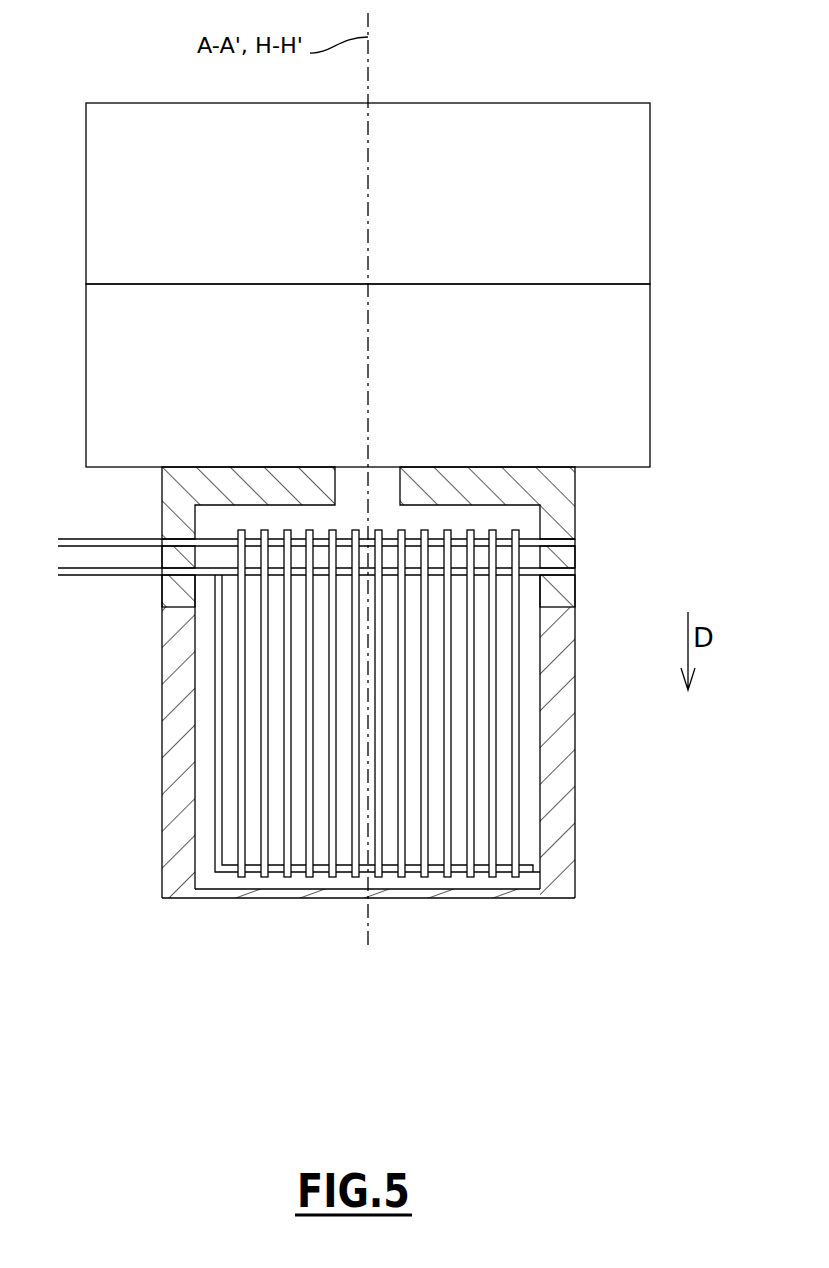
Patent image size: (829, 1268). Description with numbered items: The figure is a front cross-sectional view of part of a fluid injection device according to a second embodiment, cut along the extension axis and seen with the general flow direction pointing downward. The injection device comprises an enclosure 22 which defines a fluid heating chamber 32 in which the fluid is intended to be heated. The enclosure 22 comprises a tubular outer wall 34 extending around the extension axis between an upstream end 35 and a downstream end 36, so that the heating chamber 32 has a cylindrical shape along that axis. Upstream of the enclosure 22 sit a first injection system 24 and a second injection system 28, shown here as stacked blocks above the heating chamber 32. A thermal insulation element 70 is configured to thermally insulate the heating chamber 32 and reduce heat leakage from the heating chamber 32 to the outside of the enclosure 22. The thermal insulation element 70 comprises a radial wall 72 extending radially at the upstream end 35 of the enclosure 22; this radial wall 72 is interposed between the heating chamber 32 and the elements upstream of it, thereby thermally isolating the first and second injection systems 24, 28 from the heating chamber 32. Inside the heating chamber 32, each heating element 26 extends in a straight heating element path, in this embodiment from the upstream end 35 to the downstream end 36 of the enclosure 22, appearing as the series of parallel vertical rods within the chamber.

The enclosure 22 is at (577, 742).
The first injection system 24 is at (652, 208).
The heating element 26 is at (513, 647).
The second injection system 28 is at (652, 341).
The fluid heating chamber 32 is at (518, 523).
The tubular outer wall 34 is at (553, 840).
The upstream end 35 is at (162, 627).
The downstream end 36 is at (577, 885).
The thermal insulation element 70 is at (183, 470).
The radial wall 72 is at (162, 508).